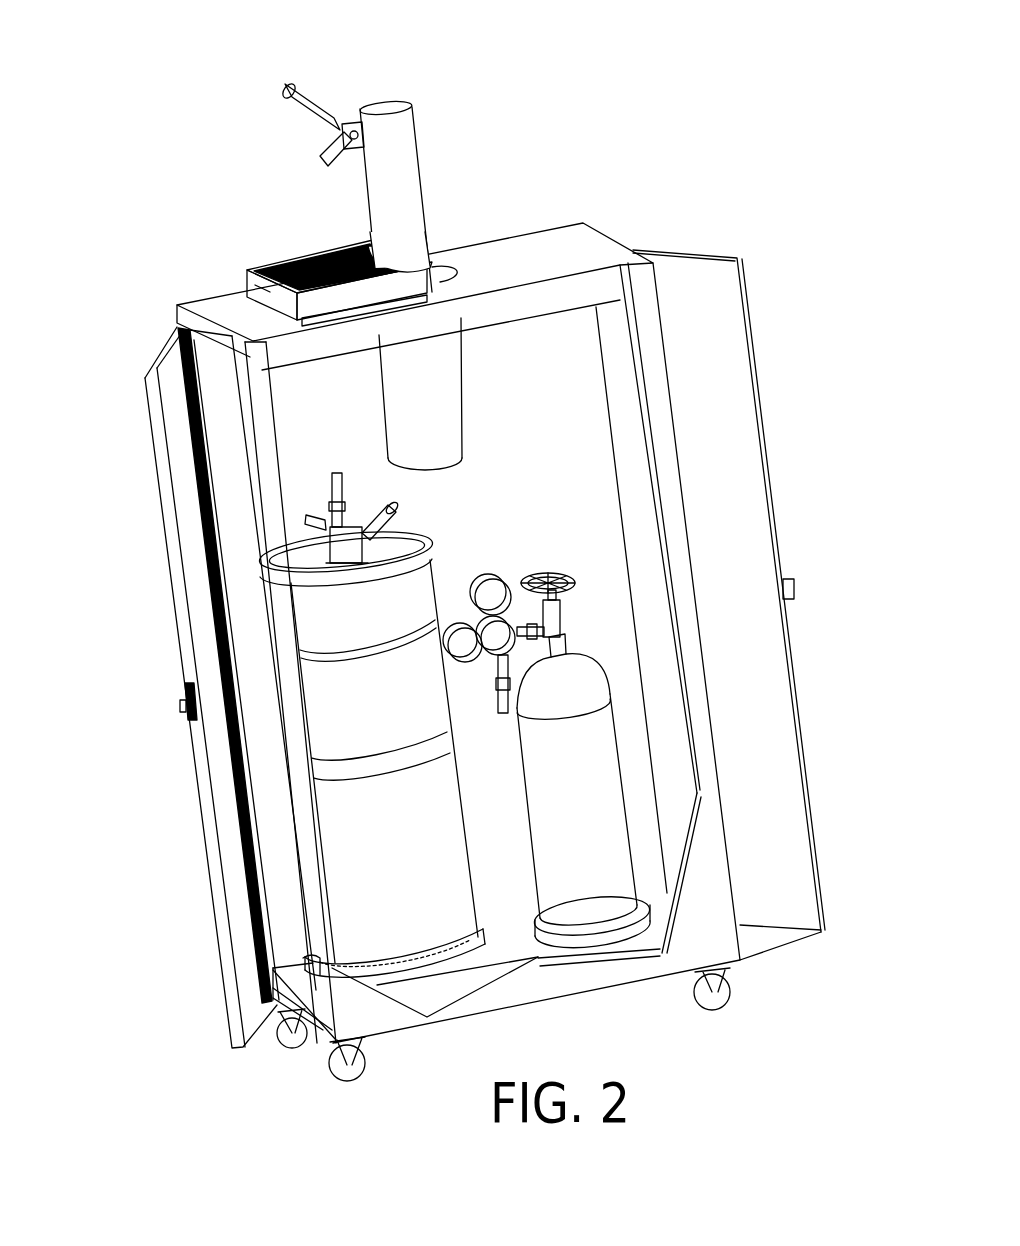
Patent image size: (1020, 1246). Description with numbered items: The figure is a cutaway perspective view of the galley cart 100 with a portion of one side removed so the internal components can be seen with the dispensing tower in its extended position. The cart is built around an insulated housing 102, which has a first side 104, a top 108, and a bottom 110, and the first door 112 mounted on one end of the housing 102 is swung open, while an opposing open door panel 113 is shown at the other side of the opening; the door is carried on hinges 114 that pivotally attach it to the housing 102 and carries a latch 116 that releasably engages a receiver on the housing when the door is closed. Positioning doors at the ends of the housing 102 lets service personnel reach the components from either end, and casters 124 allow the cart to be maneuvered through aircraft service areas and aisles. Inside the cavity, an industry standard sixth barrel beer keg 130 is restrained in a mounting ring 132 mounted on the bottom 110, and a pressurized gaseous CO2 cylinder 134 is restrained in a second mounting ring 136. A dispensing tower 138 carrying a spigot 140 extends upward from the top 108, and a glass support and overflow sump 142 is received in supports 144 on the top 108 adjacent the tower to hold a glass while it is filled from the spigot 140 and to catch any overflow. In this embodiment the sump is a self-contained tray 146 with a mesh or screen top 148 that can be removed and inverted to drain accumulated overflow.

The galley cart 100 is at (207, 228).
The housing 102 is at (558, 223).
The first side 104 is at (698, 905).
The top 108 is at (580, 262).
The bottom 110 is at (593, 988).
The first door 112 is at (208, 815).
The right door 113 is at (713, 253).
The hinges 114 is at (203, 557).
The latch 116 is at (180, 707).
The casters 124 is at (722, 1003).
The sixth barrel beer keg 130 is at (420, 587).
The mounting ring 132 is at (458, 962).
The CO2 cylinder 134 is at (583, 795).
The second mounting ring 136 is at (607, 930).
The dispensing tower 138 is at (407, 193).
The spigot 140 is at (343, 123).
The glass support and overflow sump 142 is at (315, 255).
The supports 144 is at (365, 312).
The tray 146 is at (248, 282).
The mesh or screen top 148 is at (273, 258).